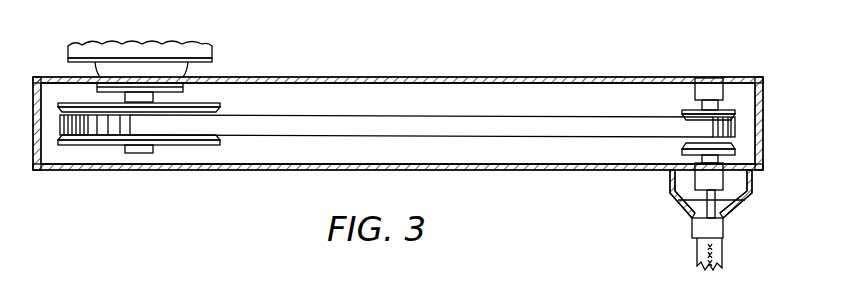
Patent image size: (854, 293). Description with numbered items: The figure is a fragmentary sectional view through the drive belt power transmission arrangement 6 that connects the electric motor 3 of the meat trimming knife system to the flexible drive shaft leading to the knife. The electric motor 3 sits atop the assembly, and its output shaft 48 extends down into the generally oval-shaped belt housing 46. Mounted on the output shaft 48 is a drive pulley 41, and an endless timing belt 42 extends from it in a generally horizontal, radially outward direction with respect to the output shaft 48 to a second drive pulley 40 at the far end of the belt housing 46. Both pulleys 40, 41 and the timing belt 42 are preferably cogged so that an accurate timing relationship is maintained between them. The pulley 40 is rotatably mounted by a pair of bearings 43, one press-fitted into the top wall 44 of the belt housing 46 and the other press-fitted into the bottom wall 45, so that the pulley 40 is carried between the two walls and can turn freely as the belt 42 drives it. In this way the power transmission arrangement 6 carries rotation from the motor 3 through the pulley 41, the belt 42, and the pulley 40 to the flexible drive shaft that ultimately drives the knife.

The electric motor 3 is at (103, 48).
The drive belt power transmission arrangement 6 is at (268, 148).
The drive pulley 40 is at (735, 117).
The drive pulley 41 is at (213, 105).
The endless timing belt 42 is at (552, 133).
The bearings 43 is at (710, 87).
The top wall 44 is at (449, 80).
The bottom wall 45 is at (437, 172).
The belt housing 46 is at (523, 79).
The output shaft 48 is at (128, 153).